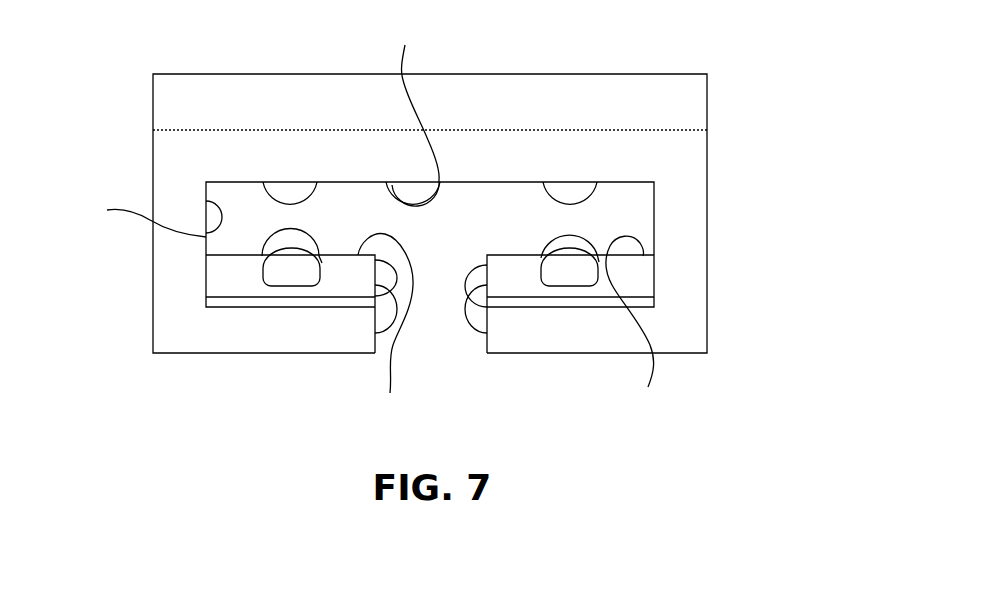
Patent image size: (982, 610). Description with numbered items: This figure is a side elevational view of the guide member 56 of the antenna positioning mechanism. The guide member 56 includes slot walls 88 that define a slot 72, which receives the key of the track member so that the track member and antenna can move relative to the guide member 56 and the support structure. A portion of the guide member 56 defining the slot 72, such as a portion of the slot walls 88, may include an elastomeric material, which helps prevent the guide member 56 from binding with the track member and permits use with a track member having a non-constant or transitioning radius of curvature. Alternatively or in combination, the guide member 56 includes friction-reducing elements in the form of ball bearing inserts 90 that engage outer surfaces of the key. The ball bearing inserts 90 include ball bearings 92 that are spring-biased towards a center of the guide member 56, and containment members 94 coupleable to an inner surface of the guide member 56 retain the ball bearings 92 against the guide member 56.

The guide member 56 is at (740, 110).
The slot 72 is at (623, 208).
The slot walls 88 is at (370, 218).
The ball bearing inserts 90 is at (336, 296).
The ball bearings 92 is at (284, 252).
The containment members 94 is at (226, 288).